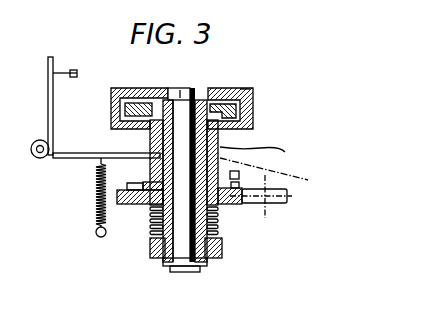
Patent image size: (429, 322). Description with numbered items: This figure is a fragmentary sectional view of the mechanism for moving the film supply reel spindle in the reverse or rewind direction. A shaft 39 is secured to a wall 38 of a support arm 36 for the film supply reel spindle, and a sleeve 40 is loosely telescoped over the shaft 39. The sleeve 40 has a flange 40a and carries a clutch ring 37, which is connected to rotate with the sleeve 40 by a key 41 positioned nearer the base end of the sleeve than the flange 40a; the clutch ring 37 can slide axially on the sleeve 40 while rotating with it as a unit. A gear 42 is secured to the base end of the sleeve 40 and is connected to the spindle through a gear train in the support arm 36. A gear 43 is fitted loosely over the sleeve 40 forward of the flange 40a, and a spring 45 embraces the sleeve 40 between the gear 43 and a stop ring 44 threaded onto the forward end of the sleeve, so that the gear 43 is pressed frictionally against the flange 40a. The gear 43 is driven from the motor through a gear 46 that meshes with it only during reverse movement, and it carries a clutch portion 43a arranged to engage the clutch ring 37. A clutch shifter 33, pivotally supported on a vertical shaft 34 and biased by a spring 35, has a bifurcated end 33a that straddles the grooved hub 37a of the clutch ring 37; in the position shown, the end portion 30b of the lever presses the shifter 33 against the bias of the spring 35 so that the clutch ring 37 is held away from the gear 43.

The end portion 30b is at (74, 70).
The clutch shifter 33 is at (50, 110).
The bifurcated end portion 33a is at (150, 153).
The vertical shaft 34 is at (38, 145).
The spring 35 is at (97, 224).
The support arm 36 is at (255, 116).
The clutch ring 37 is at (220, 163).
The hub 37a is at (273, 155).
The wall 38 is at (210, 102).
The shaft 39 is at (172, 92).
The sleeve 40 is at (222, 139).
The flange 40a is at (247, 221).
The key 41 is at (277, 176).
The gear 42 is at (245, 92).
The gear 43 is at (240, 205).
The clutch portion 43a is at (128, 186).
The stop ring 44 is at (209, 262).
The spring 45 is at (152, 232).
The gear 46 is at (285, 204).